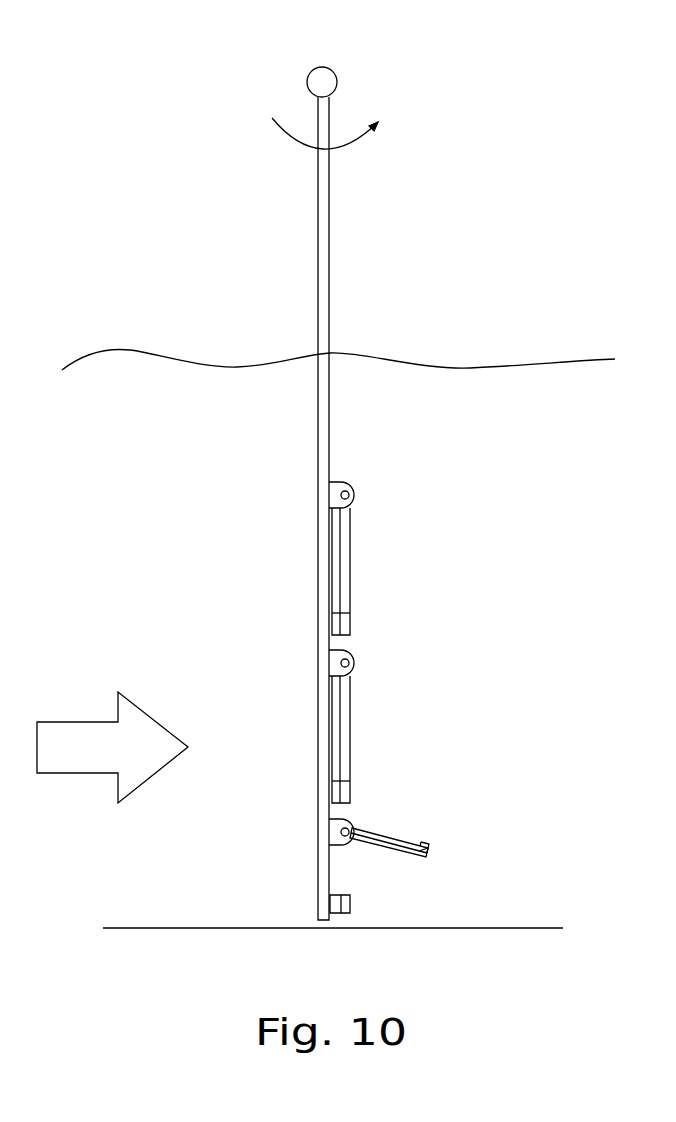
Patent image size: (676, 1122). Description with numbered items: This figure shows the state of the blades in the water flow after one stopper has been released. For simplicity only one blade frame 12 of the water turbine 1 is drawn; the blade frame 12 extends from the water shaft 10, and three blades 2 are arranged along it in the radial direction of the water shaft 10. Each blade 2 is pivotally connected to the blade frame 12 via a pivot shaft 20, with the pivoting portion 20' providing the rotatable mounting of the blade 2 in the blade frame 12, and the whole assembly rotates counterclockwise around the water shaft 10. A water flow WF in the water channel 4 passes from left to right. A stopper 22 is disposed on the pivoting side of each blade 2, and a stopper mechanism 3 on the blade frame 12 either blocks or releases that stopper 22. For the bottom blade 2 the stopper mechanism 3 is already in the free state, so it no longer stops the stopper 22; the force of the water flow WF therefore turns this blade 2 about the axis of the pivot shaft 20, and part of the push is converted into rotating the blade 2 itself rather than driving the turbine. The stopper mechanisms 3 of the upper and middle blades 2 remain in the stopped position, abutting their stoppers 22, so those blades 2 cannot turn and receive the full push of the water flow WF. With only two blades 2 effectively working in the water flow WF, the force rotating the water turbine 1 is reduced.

The water turbine 1 is at (265, 145).
The water shaft 10 is at (336, 72).
The blade frame 12 is at (323, 205).
The water channel 4 is at (570, 460).
The pivot shaft 20 is at (304, 655).
The pivoting portion 20' is at (429, 638).
The blade 2 is at (350, 563).
The stopper mechanism 3 is at (355, 622).
The stopper 22 is at (431, 855).
The water flow WF is at (75, 735).